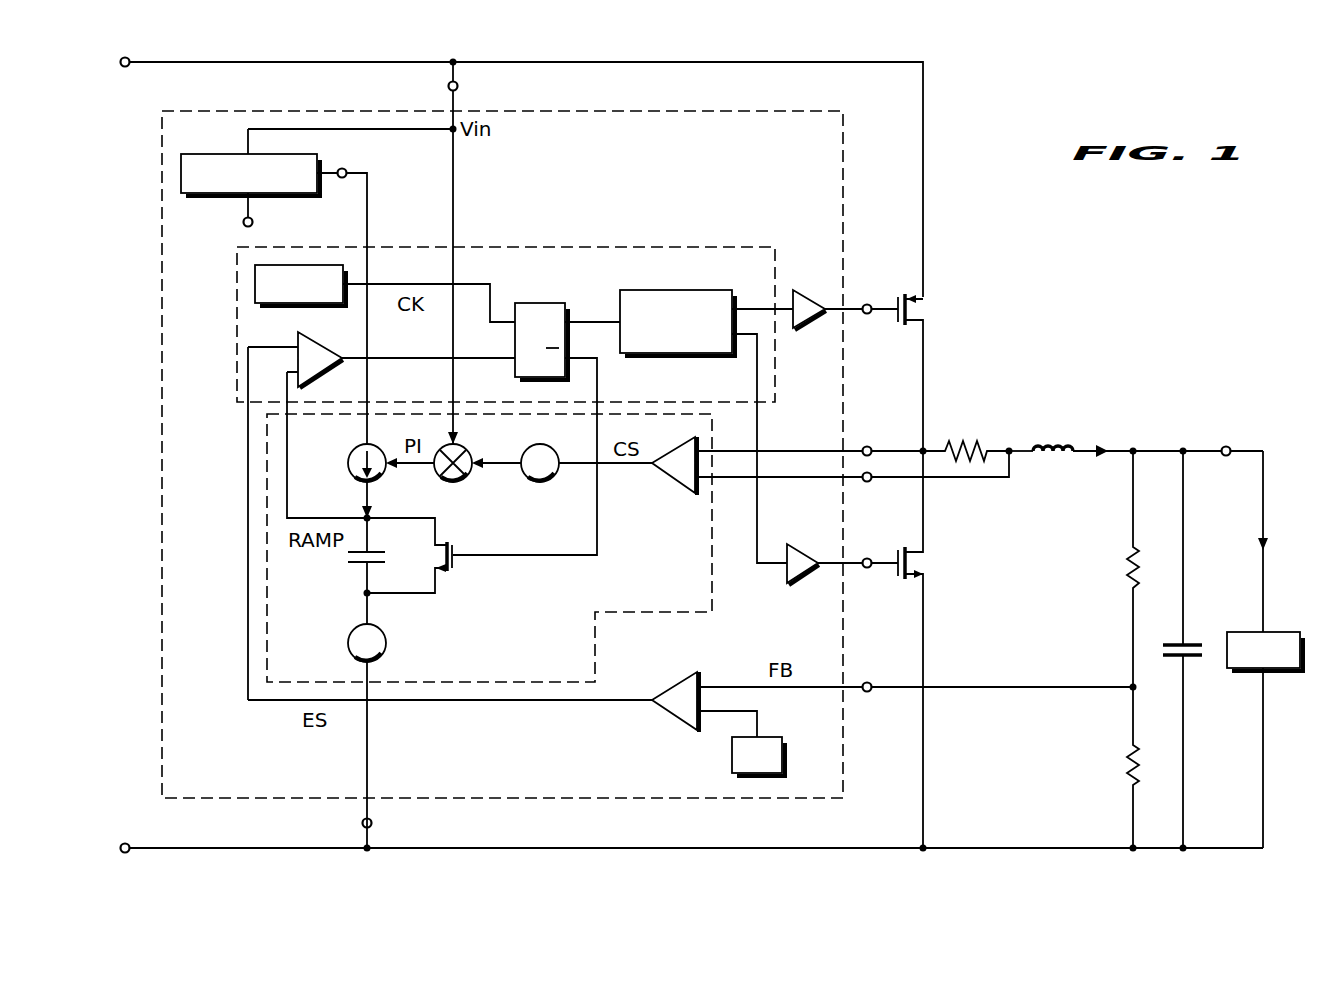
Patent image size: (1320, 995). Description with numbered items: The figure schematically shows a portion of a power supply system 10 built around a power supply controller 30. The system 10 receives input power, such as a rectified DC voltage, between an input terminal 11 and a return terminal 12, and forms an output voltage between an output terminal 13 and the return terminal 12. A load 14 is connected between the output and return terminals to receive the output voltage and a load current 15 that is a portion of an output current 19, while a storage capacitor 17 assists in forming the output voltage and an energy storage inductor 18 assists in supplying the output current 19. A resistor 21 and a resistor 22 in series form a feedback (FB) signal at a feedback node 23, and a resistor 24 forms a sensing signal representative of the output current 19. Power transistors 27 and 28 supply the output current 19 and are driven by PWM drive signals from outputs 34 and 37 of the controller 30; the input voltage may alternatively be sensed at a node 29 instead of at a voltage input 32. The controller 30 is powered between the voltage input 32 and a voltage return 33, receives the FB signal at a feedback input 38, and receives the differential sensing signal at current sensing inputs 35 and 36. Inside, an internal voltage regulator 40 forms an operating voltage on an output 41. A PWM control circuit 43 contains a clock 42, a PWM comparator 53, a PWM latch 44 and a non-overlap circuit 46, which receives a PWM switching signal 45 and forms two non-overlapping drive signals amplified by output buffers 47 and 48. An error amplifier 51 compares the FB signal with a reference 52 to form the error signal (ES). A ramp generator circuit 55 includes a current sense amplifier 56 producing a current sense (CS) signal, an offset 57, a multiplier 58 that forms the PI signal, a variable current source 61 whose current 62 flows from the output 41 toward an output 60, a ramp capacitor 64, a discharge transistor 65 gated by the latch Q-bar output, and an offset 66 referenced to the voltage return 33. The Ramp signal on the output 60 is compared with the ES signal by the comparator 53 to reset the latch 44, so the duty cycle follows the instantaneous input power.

The power supply system 10 is at (1170, 218).
The input terminal 11 is at (124, 70).
The return terminal 12 is at (124, 842).
The output terminal 13 is at (1226, 444).
The load 14 is at (1284, 676).
The load current 15 is at (1257, 546).
The storage capacitor 17 is at (1193, 642).
The energy storage inductor 18 is at (1050, 432).
The output current 19 is at (1104, 459).
The resistor 21 is at (1124, 572).
The resistor 22 is at (1124, 768).
The feedback node 23 is at (1130, 682).
The resistor 24 is at (965, 439).
The transistor 27 is at (913, 309).
The transistor 28 is at (913, 565).
The node 29 is at (920, 448).
The power supply controller 30 is at (161, 521).
The voltage input 32 is at (459, 86).
The voltage return 33 is at (253, 222).
The output 34 is at (866, 315).
The current sensing input 35 is at (866, 445).
The current sensing input 36 is at (866, 483).
The output 37 is at (866, 569).
The feedback input 38 is at (866, 693).
The internal voltage regulator 40 is at (203, 196).
The output 41 is at (347, 170).
The clock 42 is at (250, 284).
The PWM control circuit 43 is at (687, 246).
The PWM latch 44 is at (540, 302).
The PWM switching signal 45 is at (591, 320).
The non-overlap circuit 46 is at (672, 356).
The output buffer 47 is at (814, 297).
The output buffer 48 is at (807, 550).
The error amplifier 51 is at (666, 716).
The reference 52 is at (786, 757).
The PWM comparator 53 is at (320, 340).
The ramp generator circuit 55 is at (642, 613).
The current sense amplifier 56 is at (670, 470).
The offset 57 is at (532, 483).
The multiplier 58 is at (470, 482).
The output 60 is at (372, 516).
The variable current source 61 is at (346, 450).
The ramp current 62 is at (354, 499).
The ramp capacitor 64 is at (352, 570).
The discharge transistor 65 is at (456, 576).
The offset 66 is at (388, 643).